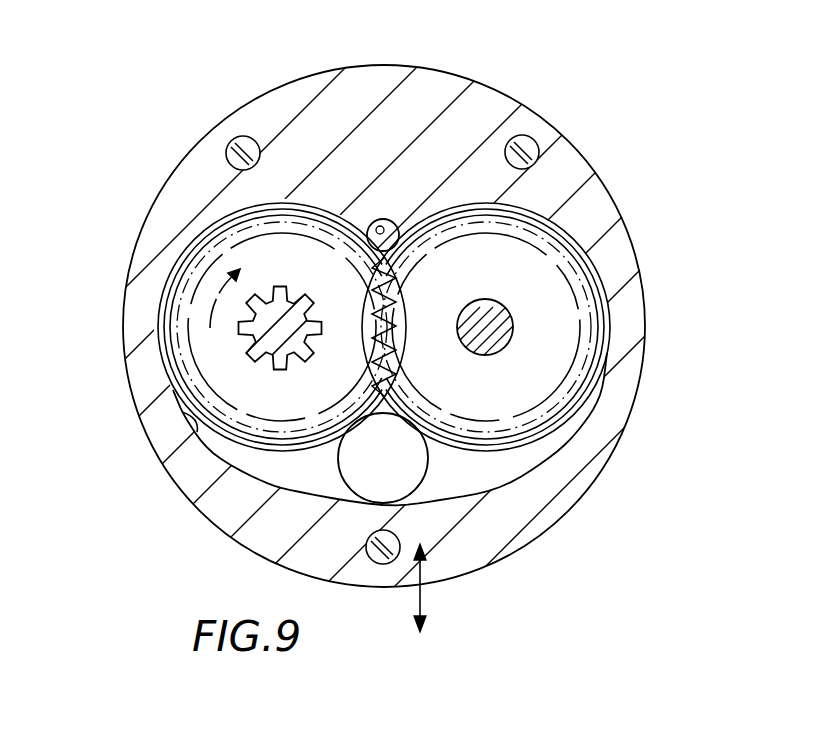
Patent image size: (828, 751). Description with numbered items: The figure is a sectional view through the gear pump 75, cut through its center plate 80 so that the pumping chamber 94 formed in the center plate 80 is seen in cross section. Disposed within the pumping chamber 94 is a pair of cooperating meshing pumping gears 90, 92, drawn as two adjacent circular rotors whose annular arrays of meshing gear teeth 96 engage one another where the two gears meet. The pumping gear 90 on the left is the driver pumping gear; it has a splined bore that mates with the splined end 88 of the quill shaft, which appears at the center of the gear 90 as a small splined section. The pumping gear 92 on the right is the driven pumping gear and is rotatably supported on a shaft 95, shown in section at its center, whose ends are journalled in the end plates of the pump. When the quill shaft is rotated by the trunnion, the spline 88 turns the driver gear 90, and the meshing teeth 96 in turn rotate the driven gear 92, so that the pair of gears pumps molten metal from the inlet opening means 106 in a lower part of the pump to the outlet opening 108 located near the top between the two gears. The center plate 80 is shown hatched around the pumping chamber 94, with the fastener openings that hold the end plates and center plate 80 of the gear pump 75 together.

The gear pump 75 is at (630, 138).
The center plate 80 is at (127, 350).
The splined end 88 is at (280, 352).
The pumping gear 90 is at (160, 302).
The pumping gear 92 is at (583, 312).
The pumping chamber 94 is at (194, 430).
The shaft 95 is at (506, 343).
The meshing gear teeth 96 is at (361, 228).
The inlet opening means 106 is at (364, 550).
The outlet opening 108 is at (390, 222).